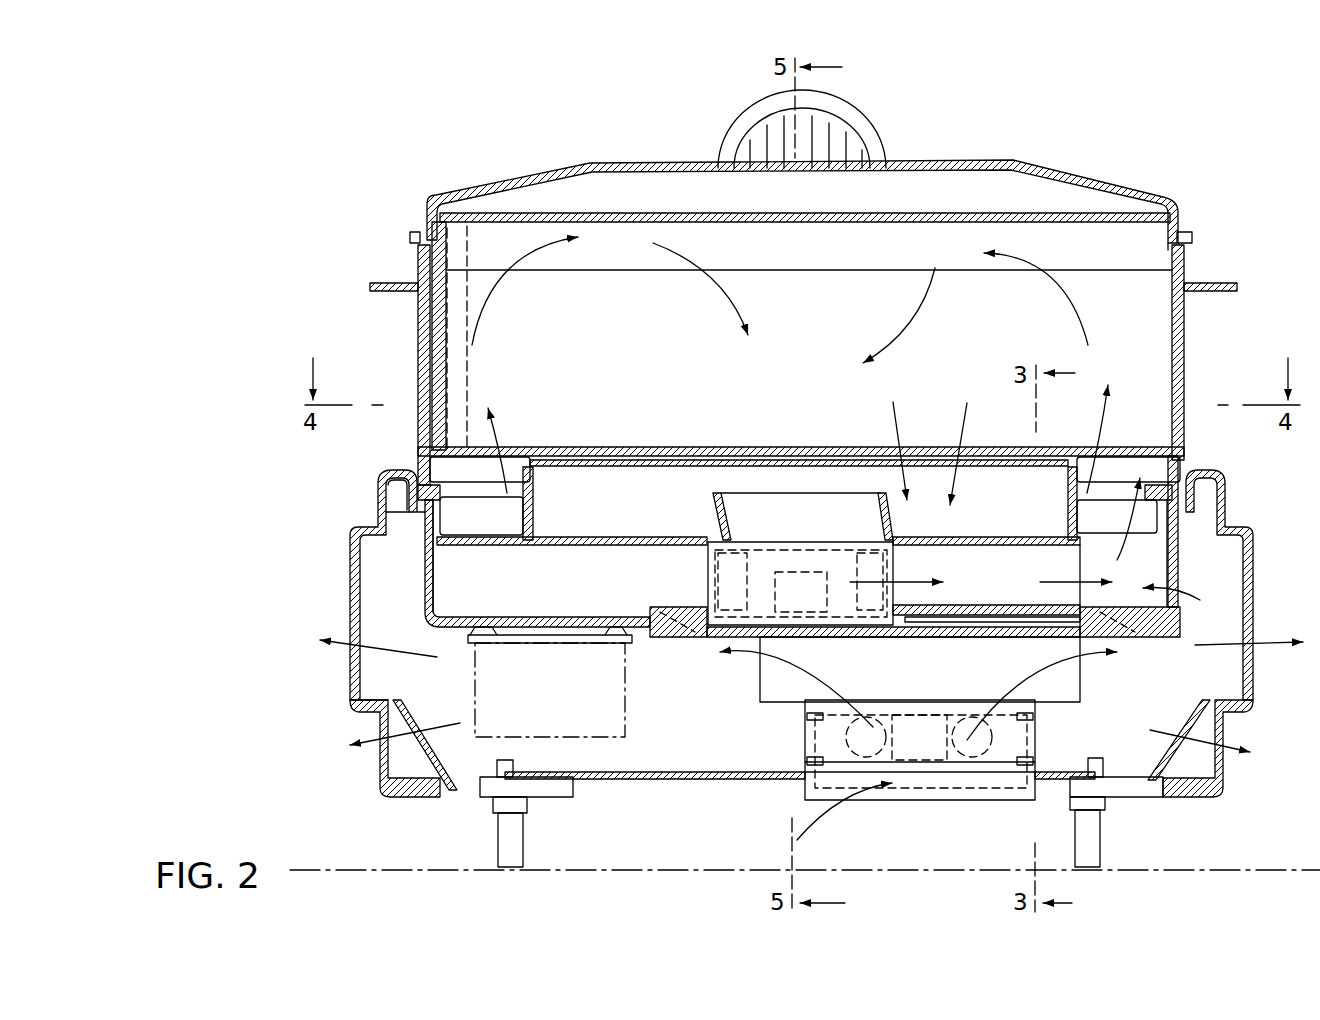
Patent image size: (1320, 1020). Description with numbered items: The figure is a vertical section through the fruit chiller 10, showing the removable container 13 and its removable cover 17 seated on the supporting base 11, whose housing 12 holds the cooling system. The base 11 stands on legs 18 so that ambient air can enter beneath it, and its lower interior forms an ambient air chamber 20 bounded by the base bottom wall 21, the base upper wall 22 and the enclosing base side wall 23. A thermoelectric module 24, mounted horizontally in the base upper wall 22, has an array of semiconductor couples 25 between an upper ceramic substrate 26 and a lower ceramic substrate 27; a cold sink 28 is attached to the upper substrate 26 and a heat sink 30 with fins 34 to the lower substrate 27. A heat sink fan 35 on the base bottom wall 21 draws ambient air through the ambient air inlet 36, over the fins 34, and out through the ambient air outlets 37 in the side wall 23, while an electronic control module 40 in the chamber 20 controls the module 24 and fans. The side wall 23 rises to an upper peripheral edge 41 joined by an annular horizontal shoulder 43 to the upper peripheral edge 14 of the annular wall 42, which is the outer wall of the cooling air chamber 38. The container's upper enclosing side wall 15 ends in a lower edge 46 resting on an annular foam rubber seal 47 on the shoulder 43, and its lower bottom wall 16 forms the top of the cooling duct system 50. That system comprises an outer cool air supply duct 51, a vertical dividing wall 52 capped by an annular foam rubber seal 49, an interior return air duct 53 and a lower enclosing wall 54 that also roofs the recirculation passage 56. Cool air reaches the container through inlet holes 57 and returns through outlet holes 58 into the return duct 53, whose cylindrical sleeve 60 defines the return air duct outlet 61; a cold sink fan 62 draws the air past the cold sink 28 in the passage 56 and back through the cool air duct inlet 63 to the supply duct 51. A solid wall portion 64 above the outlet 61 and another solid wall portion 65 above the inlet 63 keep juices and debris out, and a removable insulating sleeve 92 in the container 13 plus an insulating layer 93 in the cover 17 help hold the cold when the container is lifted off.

The fruit chiller 10 is at (1238, 320).
The supporting base 11 is at (1257, 533).
The housing 12 is at (420, 586).
The removable container 13 is at (1187, 360).
The upper peripheral edge 14 is at (428, 530).
The upper enclosing side wall 15 is at (1183, 418).
The lower bottom wall 16 is at (847, 440).
The removable cover 17 is at (513, 182).
The legs 18 is at (507, 838).
The ambient air chamber 20 is at (697, 735).
The base bottom wall 21 is at (708, 778).
The base upper wall 22 is at (548, 617).
The enclosing base side wall 23 is at (352, 683).
The thermoelectric module 24 is at (953, 600).
The semiconductor couples 25 is at (990, 637).
The upper ceramic substrate 26 is at (1040, 610).
The lower ceramic substrate 27 is at (862, 633).
The cold sink 28 is at (920, 560).
The heat sink 30 is at (920, 669).
The fins 34 is at (1070, 688).
The heat sink fan 35 is at (923, 743).
The ambient air inlet 36 is at (977, 788).
The ambient air outlets 37 is at (350, 660).
The cooling air chamber 38 is at (617, 485).
The electronic control module 40 is at (550, 682).
The upper peripheral edge 41 is at (410, 470).
The annular wall 42 is at (433, 572).
The annular horizontal shoulder 43 is at (397, 517).
The lower edge 46 is at (427, 473).
The annular foam rubber seal 47 is at (798, 516).
The annular foam rubber seal 49 is at (1065, 450).
The cooling duct system 50 is at (988, 490).
The cool air supply duct 51 is at (505, 470).
The dividing wall 52 is at (533, 500).
The return air duct 53 is at (697, 493).
The lower enclosing wall 54 is at (622, 535).
The recirculation passage 56 is at (1149, 620).
The inlet holes 57 is at (500, 470).
The outlet holes 58 is at (647, 497).
The cylindrical sleeve 60 is at (892, 508).
The return air duct outlet 61 is at (765, 527).
The cold sink fan 62 is at (757, 585).
The cool air duct inlet 63 is at (1137, 533).
The solid wall portion 64 is at (1150, 453).
The solid wall portion 65 is at (802, 447).
The insulating sleeve 92 is at (450, 340).
The insulating layer 93 is at (800, 222).